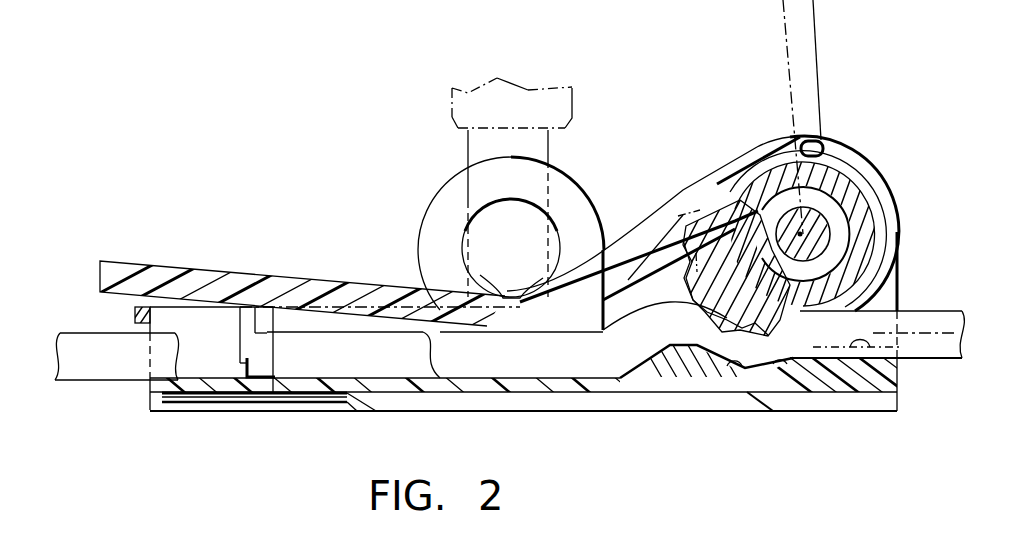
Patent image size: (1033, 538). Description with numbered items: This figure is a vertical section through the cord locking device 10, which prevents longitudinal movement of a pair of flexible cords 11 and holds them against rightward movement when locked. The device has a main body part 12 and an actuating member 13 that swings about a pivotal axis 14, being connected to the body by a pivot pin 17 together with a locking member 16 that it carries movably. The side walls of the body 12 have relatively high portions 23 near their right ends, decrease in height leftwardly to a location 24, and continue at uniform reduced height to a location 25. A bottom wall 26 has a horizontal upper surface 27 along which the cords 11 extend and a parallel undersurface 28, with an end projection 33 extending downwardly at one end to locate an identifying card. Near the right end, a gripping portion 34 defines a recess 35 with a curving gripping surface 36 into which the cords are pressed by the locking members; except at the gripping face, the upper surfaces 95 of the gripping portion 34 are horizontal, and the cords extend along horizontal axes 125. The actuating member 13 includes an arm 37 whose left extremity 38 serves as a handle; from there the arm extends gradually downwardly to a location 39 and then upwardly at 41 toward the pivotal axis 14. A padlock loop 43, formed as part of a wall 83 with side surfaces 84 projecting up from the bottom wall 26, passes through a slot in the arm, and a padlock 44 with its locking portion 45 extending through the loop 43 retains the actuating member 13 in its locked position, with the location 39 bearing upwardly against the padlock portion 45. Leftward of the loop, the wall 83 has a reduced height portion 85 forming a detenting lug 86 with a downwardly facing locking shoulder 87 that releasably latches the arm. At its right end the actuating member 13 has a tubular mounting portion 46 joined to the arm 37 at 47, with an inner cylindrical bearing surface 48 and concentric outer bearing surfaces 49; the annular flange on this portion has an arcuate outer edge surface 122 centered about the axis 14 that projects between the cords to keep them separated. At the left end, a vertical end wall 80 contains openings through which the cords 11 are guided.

The cord locking device 10 is at (641, 110).
The flexible cords 11 is at (962, 312).
The main body part 12 is at (690, 360).
The actuating member 13 is at (262, 270).
The pivotal axis 14 is at (840, 234).
The locking member 16 is at (777, 173).
The pivot pin 17 is at (818, 203).
The relatively high portions of side walls 23 is at (718, 178).
The location of reduced wall height 24 is at (604, 250).
The location on side walls 25 is at (150, 322).
The bottom wall 26 is at (437, 348).
The upper surface of bottom wall 27 is at (543, 372).
The undersurface of bottom wall 28 is at (377, 393).
The end projection 33 is at (150, 395).
The gripping portion 34 is at (780, 358).
The recess 35 is at (795, 378).
The gripping surface 36 is at (742, 345).
The arm 37 is at (151, 268).
The extremity of arm 38 is at (100, 268).
The location on arm 39 is at (507, 297).
The upwardly extending portion of arm 41 is at (647, 247).
The padlock loop 43 is at (450, 188).
The padlock 44 is at (525, 88).
The locking portion of padlock 45 is at (550, 148).
The tubular mounting portion 46 is at (824, 195).
The connection location 47 is at (733, 312).
The inner cylindrical bearing surface 48 is at (790, 262).
The outer cylindrical bearing surfaces 49 is at (802, 235).
The end wall 80 is at (135, 313).
The wall 83 is at (447, 248).
The side surfaces of wall 84 is at (353, 325).
The reduced height portion 85 is at (267, 343).
The detenting lug 86 is at (277, 330).
The locking shoulder 87 is at (273, 378).
The upper surfaces of gripping portion 95 is at (880, 350).
The outer edge surface of flange 122 is at (860, 182).
The horizontal axes of cords 125 is at (913, 333).